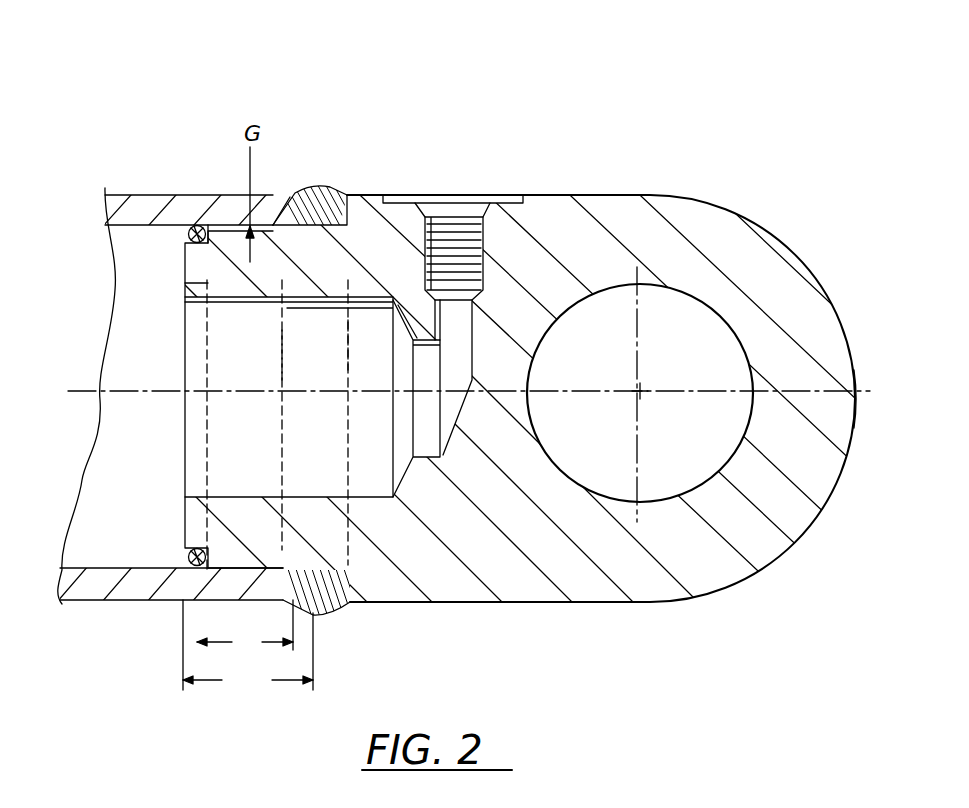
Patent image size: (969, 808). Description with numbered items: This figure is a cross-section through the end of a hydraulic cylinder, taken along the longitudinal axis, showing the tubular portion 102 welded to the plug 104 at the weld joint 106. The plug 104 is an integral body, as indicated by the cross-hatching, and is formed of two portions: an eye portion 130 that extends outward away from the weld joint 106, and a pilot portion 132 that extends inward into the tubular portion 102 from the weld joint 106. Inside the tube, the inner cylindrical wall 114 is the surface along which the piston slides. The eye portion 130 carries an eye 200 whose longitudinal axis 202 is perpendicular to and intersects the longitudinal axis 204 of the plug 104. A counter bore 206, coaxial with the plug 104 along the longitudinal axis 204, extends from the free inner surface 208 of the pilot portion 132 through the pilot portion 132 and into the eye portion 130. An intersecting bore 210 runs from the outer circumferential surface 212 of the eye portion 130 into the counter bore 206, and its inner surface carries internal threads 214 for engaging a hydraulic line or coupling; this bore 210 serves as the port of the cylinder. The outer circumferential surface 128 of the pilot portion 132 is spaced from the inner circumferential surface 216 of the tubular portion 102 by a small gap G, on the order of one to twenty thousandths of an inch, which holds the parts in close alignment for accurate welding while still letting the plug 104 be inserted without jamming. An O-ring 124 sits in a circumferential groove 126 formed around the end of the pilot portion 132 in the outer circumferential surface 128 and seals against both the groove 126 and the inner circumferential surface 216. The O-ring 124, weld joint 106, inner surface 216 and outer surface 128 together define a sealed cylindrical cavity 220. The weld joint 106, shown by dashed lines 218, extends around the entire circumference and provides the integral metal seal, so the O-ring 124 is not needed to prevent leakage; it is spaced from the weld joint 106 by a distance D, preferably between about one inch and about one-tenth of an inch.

The tubular portion 102 is at (153, 163).
The plug 104 is at (625, 195).
The weld joint 106 is at (313, 185).
The inner cylindrical wall 114 is at (82, 567).
The O-ring 124 is at (188, 554).
The circumferential groove 126 is at (188, 238).
The outer circumferential surface 128 is at (248, 572).
The eye portion 130 is at (676, 90).
The pilot portion 132 is at (248, 648).
The eye 200 is at (727, 330).
The longitudinal axis of the eye 202 is at (642, 390).
The longitudinal axis of the plug 204 is at (830, 390).
The counter bore 206 is at (220, 448).
The free inner surface 208 is at (185, 284).
The intersecting bore 210 is at (476, 194).
The outer circumferential surface of eye portion 212 is at (367, 193).
The internal threads 214 is at (435, 235).
The inner circumferential surface 216 is at (225, 230).
The dashed lines 218 is at (348, 350).
The sealed cylindrical cavity 220 is at (276, 222).
The distance D is at (245, 628).